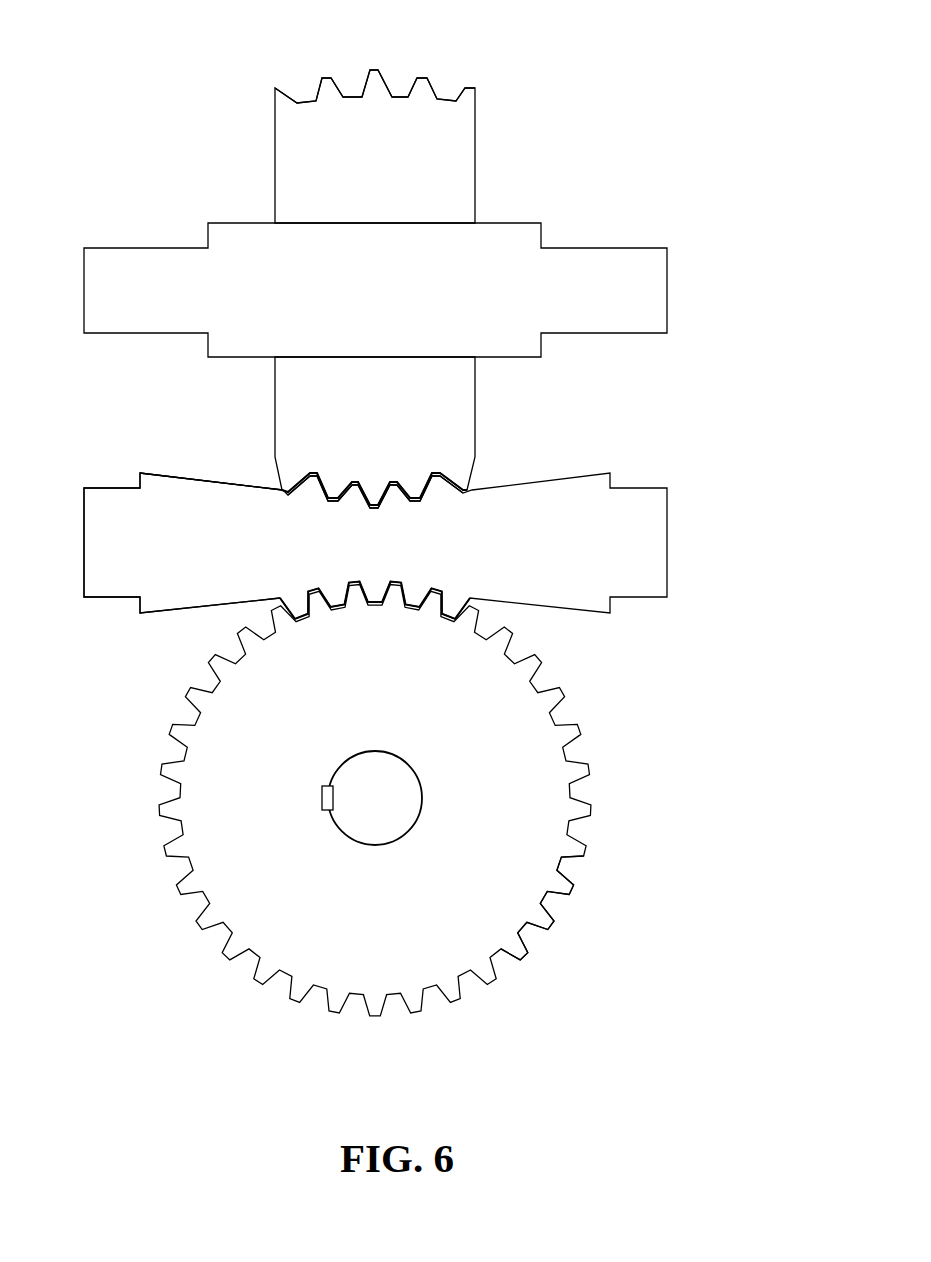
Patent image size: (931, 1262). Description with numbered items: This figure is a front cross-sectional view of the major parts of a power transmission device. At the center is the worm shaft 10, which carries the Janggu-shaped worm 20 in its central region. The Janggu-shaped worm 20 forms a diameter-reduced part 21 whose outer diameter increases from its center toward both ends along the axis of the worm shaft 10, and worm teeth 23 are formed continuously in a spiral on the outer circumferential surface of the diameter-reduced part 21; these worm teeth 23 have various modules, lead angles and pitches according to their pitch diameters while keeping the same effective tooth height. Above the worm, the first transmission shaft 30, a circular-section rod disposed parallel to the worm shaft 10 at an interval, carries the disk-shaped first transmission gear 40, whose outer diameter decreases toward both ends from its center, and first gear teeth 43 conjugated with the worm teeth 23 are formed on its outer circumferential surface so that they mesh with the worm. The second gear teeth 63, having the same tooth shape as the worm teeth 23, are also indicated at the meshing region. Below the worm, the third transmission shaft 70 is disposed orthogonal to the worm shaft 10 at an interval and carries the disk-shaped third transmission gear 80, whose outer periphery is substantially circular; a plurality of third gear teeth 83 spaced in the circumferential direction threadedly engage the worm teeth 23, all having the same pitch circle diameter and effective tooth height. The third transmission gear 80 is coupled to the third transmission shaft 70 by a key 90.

The worm shaft 10 is at (674, 584).
The Janggu-shaped worm 20 is at (147, 622).
The diameter-reduced part 21 is at (180, 474).
The worm teeth 23 is at (353, 493).
The first transmission shaft 30 is at (134, 238).
The first transmission gear 40 is at (484, 134).
The first gear teeth 43 is at (371, 70).
The second gear teeth 63 is at (393, 580).
The third transmission shaft 70 is at (390, 826).
The third transmission gear 80 is at (554, 786).
The third gear teeth 83 is at (528, 955).
The key 90 is at (321, 796).